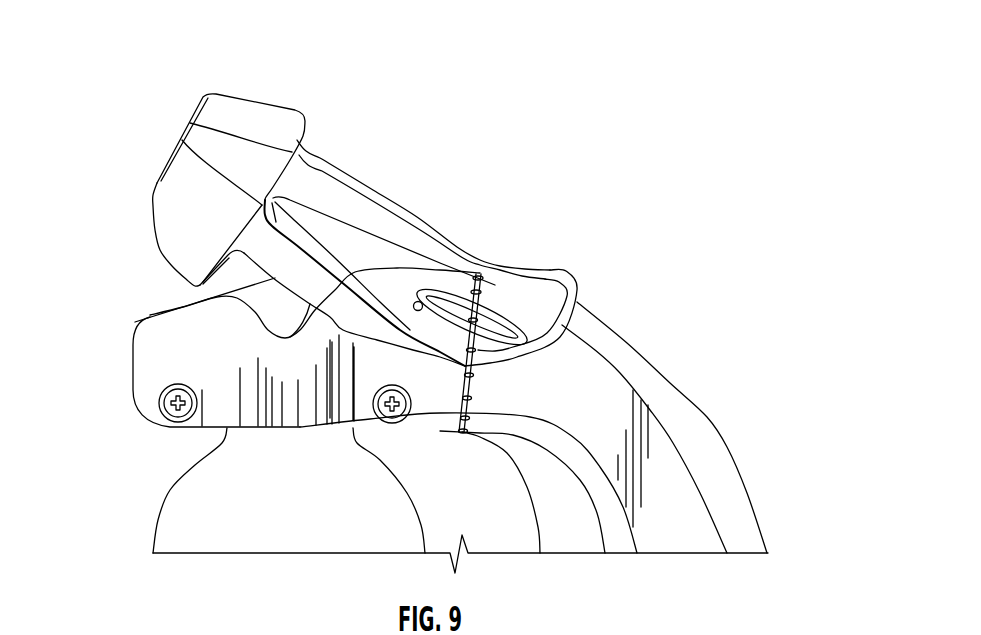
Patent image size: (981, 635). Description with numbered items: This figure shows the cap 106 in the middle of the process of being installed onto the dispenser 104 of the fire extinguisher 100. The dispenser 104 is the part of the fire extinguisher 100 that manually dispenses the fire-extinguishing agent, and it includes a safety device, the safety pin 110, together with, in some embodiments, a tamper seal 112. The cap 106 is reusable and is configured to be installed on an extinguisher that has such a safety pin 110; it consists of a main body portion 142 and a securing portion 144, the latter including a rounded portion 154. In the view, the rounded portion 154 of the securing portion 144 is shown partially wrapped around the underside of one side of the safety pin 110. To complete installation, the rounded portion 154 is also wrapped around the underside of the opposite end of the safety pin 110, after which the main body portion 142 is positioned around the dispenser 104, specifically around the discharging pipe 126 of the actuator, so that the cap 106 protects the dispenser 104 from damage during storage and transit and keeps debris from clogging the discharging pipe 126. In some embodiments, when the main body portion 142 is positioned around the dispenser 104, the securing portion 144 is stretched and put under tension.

The fire extinguisher 100 is at (118, 42).
The dispenser 104 is at (720, 360).
The cap 106 is at (178, 95).
The safety pin 110 is at (505, 300).
The tamper seal 112 is at (480, 272).
The discharging pipe 126 is at (134, 350).
The main body portion 142 is at (256, 93).
The securing portion 144 is at (322, 157).
The rounded portion 154 is at (576, 296).